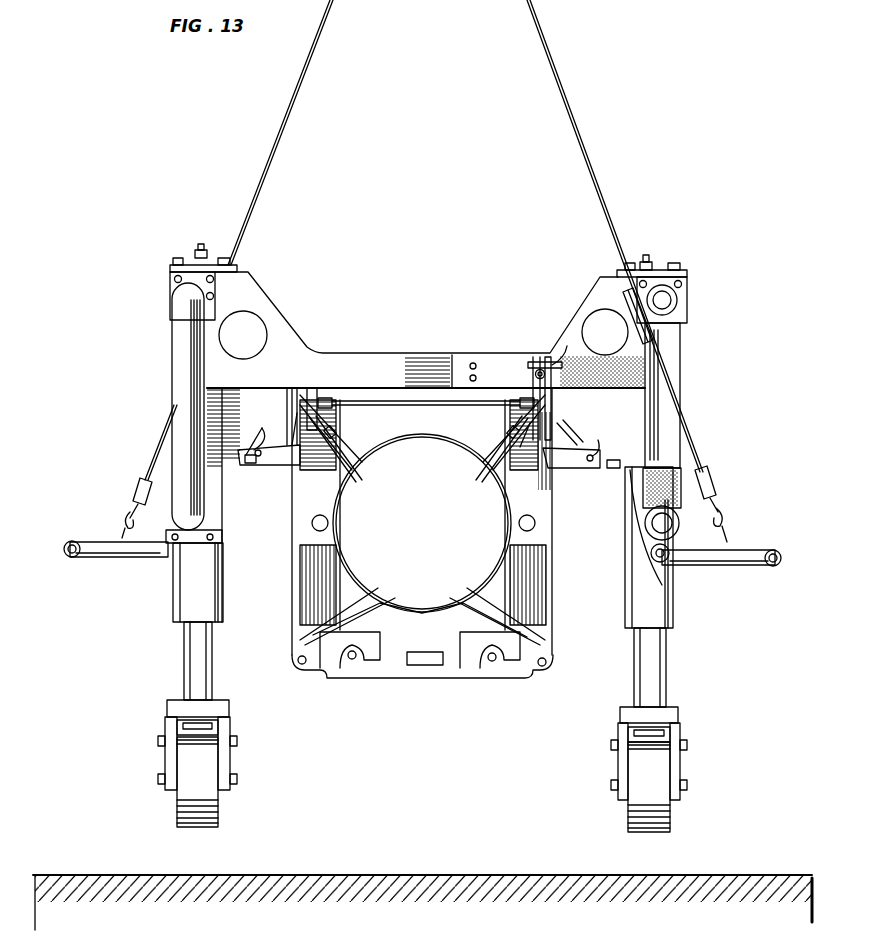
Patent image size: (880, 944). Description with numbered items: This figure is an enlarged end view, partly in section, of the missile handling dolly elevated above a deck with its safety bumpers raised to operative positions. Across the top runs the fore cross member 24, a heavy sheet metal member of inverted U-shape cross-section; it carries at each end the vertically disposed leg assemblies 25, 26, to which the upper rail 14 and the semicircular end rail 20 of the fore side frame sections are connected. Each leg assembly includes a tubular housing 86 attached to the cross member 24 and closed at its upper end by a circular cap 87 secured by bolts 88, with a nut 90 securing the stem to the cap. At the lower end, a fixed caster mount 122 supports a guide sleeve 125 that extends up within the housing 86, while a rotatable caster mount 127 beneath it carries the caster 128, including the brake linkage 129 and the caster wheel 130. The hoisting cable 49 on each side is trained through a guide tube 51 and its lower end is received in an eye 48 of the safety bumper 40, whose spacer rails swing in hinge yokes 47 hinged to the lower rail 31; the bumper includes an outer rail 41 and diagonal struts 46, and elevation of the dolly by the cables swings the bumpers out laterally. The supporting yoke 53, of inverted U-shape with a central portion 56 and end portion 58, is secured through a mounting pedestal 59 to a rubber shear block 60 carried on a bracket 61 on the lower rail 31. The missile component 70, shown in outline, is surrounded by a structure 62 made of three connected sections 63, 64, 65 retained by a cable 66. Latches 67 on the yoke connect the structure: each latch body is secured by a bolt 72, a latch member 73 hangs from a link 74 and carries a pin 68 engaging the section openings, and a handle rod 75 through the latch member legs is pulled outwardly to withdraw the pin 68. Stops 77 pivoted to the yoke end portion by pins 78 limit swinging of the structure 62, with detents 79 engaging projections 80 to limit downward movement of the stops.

The upper rail 14 is at (687, 291).
The semicircular end rail 20 is at (187, 392).
The fore cross member 24 is at (378, 353).
The leg assembly 25 is at (186, 601).
The leg assembly 26 is at (683, 608).
The lower rail 31 is at (712, 500).
The safety bumper 40 is at (80, 527).
The outer rail 41 is at (68, 557).
The diagonal strut 46 is at (128, 558).
The hinge yoke 47 is at (670, 546).
The eye 48 is at (120, 530).
The hoisting cable 49 is at (250, 210).
The guide tube 51 is at (633, 303).
The supporting yoke 53 is at (531, 348).
The central portion 56 is at (490, 353).
The end portion 58 is at (622, 355).
The mounting pedestal 59 is at (657, 423).
The shear block 60 is at (681, 482).
The bracket 61 is at (675, 516).
The structure 62 is at (496, 690).
The section 63 is at (292, 637).
The section 64 is at (370, 680).
The section 65 is at (553, 628).
The cable 66 is at (418, 404).
The latch 67 is at (300, 400).
The pin 68 is at (330, 418).
The missile component 70 is at (397, 441).
The bolt 72 is at (534, 374).
The latch member 73 is at (320, 398).
The link 74 is at (500, 430).
The handle rod 75 is at (560, 362).
The stop 77 is at (283, 458).
The pin 78 is at (266, 468).
The detent 79 is at (252, 438).
The projection 80 is at (613, 469).
The tubular housing 86 is at (223, 548).
The circular cap 87 is at (170, 266).
The bolt 88 is at (178, 258).
The nut 90 is at (204, 250).
The fixed caster mount 122 is at (228, 704).
The guide sleeve 125 is at (215, 676).
The rotatable caster mount 127 is at (165, 712).
The caster 128 is at (244, 728).
The brake linkage 129 is at (237, 750).
The caster wheel 130 is at (203, 828).